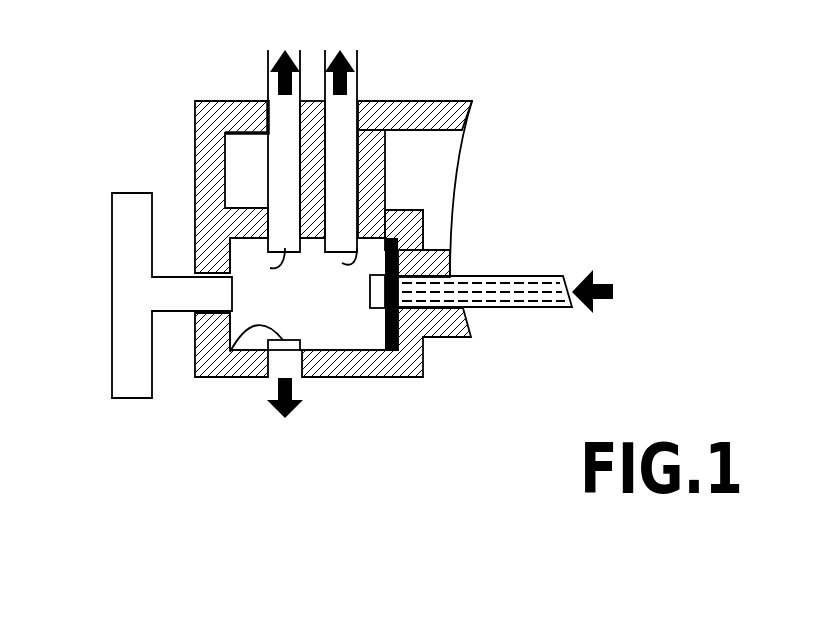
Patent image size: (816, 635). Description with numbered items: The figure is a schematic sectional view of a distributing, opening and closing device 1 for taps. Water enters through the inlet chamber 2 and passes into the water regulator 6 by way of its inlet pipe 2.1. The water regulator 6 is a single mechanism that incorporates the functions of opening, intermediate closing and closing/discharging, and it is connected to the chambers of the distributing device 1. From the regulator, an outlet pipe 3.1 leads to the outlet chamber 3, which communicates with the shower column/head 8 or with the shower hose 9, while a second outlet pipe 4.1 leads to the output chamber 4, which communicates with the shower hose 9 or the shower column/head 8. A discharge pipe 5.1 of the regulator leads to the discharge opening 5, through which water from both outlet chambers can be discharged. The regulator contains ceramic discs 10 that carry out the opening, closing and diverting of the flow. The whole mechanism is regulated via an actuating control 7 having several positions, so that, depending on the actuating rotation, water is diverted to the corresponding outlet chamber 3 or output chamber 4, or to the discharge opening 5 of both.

The distributing device 1 is at (382, 110).
The inlet chamber 2 is at (473, 285).
The inlet pipe 2.1 is at (397, 340).
The outlet chamber 3 is at (340, 180).
The outlet pipe 3.1 is at (392, 224).
The output chamber 4 is at (260, 173).
The outlet pipe 4.1 is at (270, 268).
The discharge opening 5 is at (275, 367).
The discharge pipe 5.1 is at (198, 377).
The water regulator 6 is at (331, 317).
The actuating control 7 is at (130, 367).
The shower column/head 8 is at (340, 50).
The shower hose 9 is at (283, 48).
The ceramic discs 10 is at (378, 295).